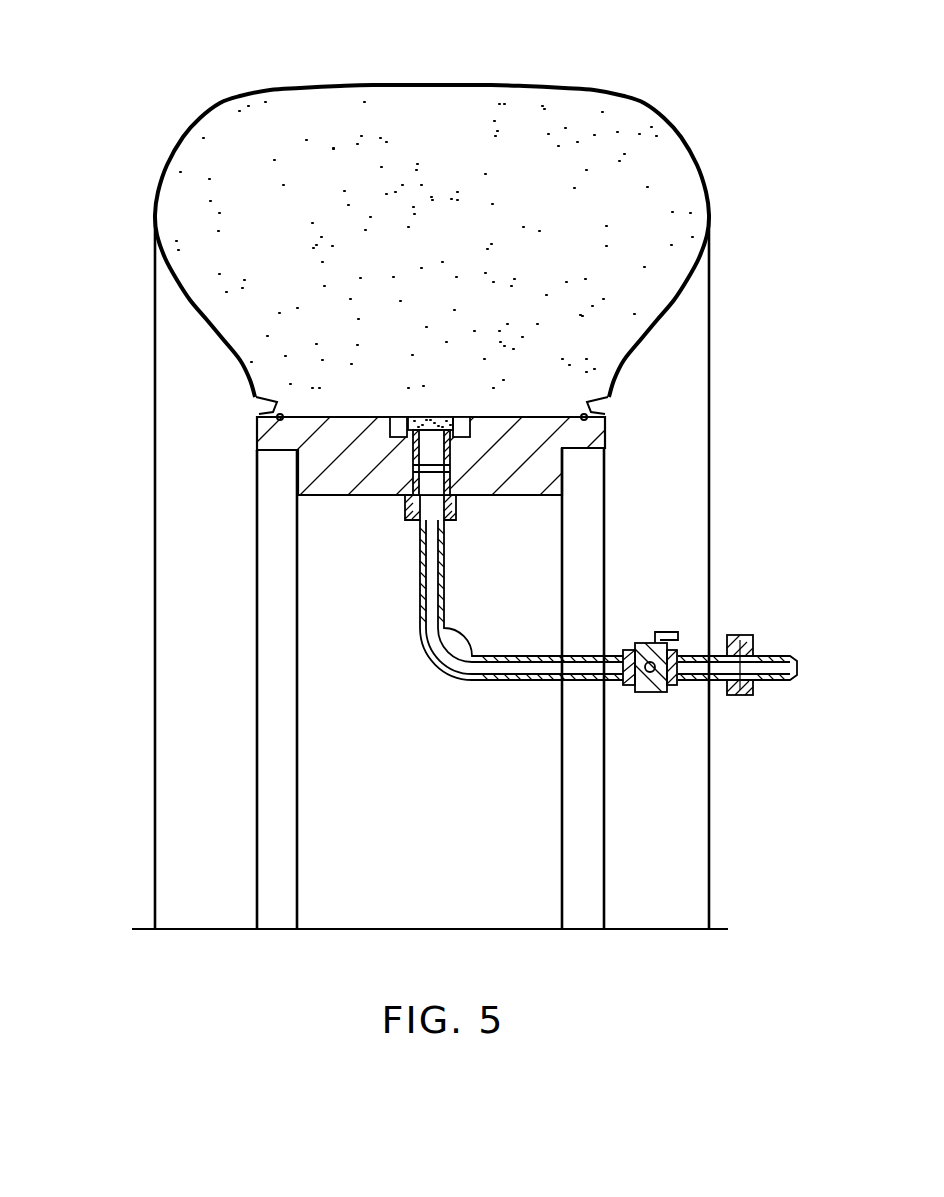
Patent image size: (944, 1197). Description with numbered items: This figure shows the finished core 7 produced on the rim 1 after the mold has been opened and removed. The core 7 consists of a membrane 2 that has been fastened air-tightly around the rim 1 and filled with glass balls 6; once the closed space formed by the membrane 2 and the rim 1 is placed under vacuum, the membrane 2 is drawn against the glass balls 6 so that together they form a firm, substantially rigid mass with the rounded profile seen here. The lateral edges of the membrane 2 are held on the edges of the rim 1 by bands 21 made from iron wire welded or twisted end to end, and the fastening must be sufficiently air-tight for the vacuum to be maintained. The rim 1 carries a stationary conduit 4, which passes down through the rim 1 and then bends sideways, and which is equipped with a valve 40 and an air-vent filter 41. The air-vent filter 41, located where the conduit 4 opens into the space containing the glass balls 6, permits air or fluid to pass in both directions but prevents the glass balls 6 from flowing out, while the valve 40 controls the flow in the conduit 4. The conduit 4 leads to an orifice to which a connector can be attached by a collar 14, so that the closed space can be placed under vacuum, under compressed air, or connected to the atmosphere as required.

The rim 1 is at (290, 433).
The membrane 2 is at (211, 93).
The stationary conduit 4 is at (420, 645).
The glass balls 6 is at (431, 290).
The core 7 is at (147, 164).
The collar 14 is at (740, 693).
The first band 21 is at (270, 400).
The valve 40 is at (660, 630).
The air-vent filter 41 is at (410, 432).